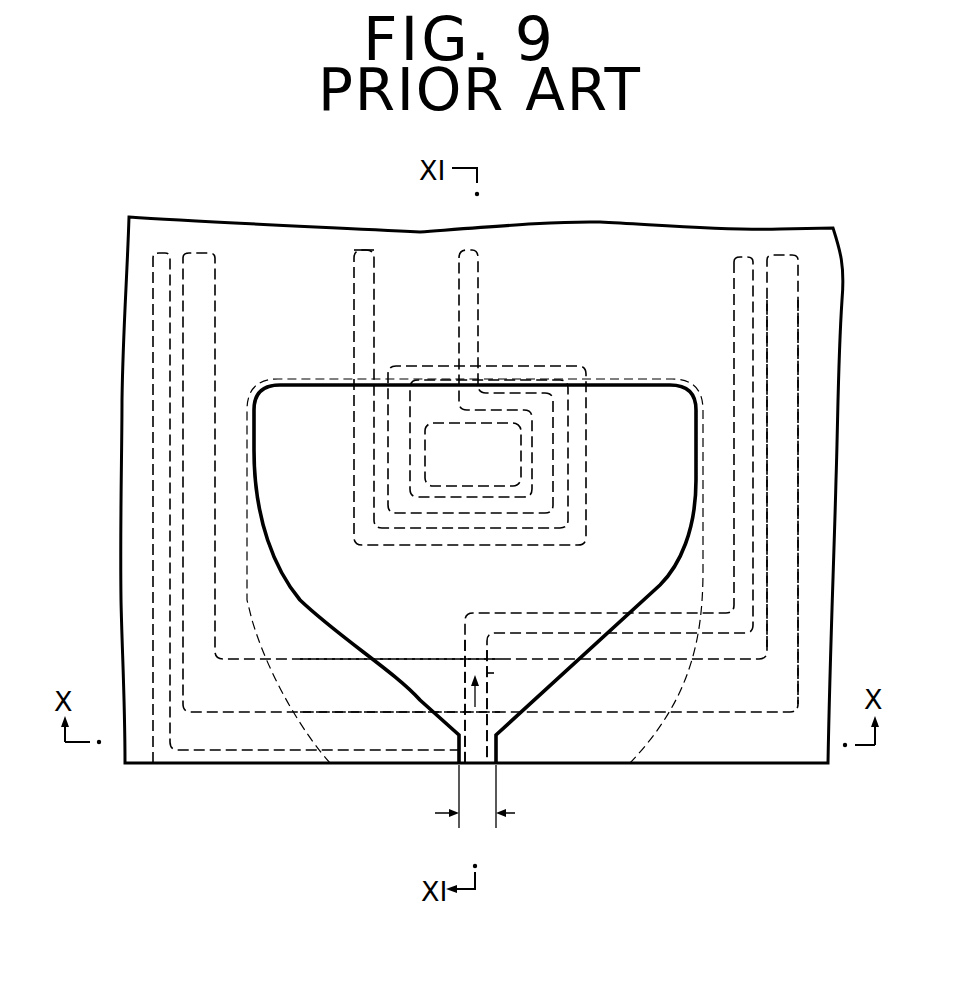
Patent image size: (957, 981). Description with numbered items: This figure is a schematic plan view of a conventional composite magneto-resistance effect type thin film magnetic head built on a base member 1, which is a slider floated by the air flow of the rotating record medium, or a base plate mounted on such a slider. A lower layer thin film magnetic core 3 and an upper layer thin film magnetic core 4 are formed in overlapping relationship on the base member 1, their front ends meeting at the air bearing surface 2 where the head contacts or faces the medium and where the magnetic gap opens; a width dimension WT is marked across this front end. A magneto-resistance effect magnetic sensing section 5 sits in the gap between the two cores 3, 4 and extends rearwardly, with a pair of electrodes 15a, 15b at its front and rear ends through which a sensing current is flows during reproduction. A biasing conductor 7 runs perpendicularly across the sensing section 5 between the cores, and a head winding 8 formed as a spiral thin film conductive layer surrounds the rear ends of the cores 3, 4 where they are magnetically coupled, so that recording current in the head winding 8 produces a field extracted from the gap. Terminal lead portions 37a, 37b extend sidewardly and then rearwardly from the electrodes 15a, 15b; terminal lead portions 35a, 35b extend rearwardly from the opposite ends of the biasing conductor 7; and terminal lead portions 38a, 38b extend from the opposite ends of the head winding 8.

The base member 1 is at (830, 612).
The air bearing surface 2 is at (348, 765).
The lower layer thin film magnetic core 3 is at (680, 690).
The upper layer thin film magnetic core 4 is at (570, 688).
The magneto-resistance effect magnetic sensing section 5 is at (488, 673).
The biasing conductor 7 is at (400, 658).
The head winding 8 is at (454, 359).
The electrode 15a is at (459, 763).
The electrode 15b is at (463, 628).
The terminal lead portion 35a is at (160, 252).
The terminal lead portion 35b is at (778, 262).
The terminal lead portion 37a is at (210, 252).
The terminal lead portion 37b is at (735, 260).
The terminal lead portion 38a is at (358, 250).
The terminal lead portion 38b is at (470, 253).
The sensing current is is at (482, 700).
The track width WT is at (475, 796).